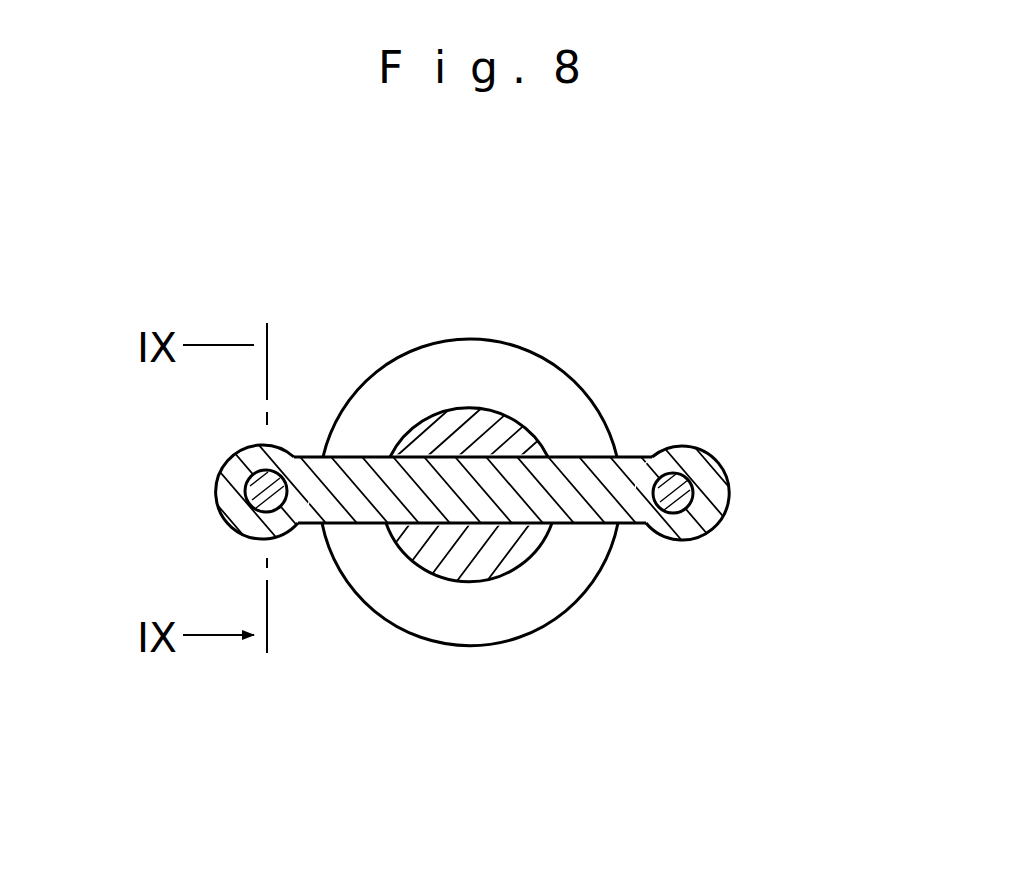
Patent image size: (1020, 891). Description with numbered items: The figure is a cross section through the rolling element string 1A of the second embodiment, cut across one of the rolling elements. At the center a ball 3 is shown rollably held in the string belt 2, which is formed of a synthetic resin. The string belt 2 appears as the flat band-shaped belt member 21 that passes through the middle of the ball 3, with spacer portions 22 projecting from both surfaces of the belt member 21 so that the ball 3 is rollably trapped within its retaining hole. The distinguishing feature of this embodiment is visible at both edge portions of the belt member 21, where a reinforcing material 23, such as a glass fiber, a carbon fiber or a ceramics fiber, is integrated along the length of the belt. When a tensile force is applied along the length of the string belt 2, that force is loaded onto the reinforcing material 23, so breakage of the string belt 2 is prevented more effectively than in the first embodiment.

The rolling element string 1A is at (739, 396).
The string belt 2 is at (681, 553).
The ball 3 is at (553, 385).
The belt member 21 is at (456, 510).
The spacer portion 22 is at (477, 407).
The reinforcing material 23 is at (245, 497).